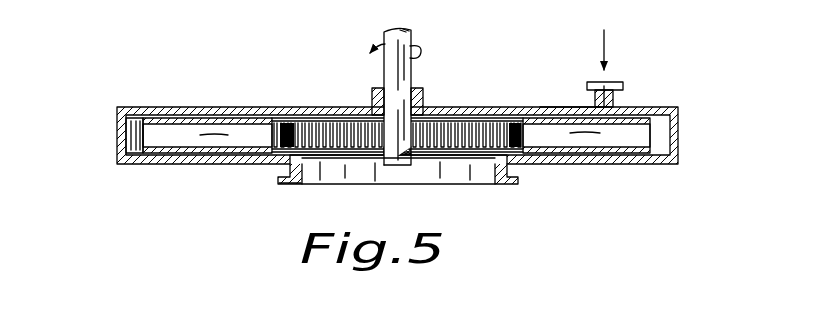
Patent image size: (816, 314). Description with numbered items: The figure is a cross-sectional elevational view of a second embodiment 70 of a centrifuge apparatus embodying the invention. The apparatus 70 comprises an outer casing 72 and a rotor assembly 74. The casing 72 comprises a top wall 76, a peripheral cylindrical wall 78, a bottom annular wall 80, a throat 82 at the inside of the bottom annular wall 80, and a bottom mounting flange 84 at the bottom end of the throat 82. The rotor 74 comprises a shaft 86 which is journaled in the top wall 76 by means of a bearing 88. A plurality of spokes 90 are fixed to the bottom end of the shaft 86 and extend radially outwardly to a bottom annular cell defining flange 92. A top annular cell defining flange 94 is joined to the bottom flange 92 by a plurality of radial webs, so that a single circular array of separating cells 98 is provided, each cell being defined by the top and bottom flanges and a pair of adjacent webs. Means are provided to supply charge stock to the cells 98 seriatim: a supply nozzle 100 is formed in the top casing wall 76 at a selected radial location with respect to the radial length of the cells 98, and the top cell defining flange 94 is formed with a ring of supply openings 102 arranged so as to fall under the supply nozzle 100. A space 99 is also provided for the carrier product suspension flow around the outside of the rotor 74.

The second embodiment 70 is at (134, 181).
The outer casing 72 is at (124, 106).
The rotor assembly 74 is at (446, 158).
The top wall 76 is at (277, 107).
The peripheral cylindrical wall 78 is at (120, 128).
The bottom annular wall 80 is at (222, 164).
The throat 82 is at (303, 165).
The bottom mounting flange 84 is at (283, 184).
The shaft 86 is at (411, 76).
The bearing 88 is at (372, 94).
The spokes 90 is at (333, 150).
The bottom annular cell defining flange 92 is at (581, 156).
The top annular cell defining flange 94 is at (550, 108).
The separating cells 98 is at (630, 133).
The space 99 is at (133, 145).
The supply nozzle 100 is at (624, 97).
The supply openings 102 is at (192, 118).